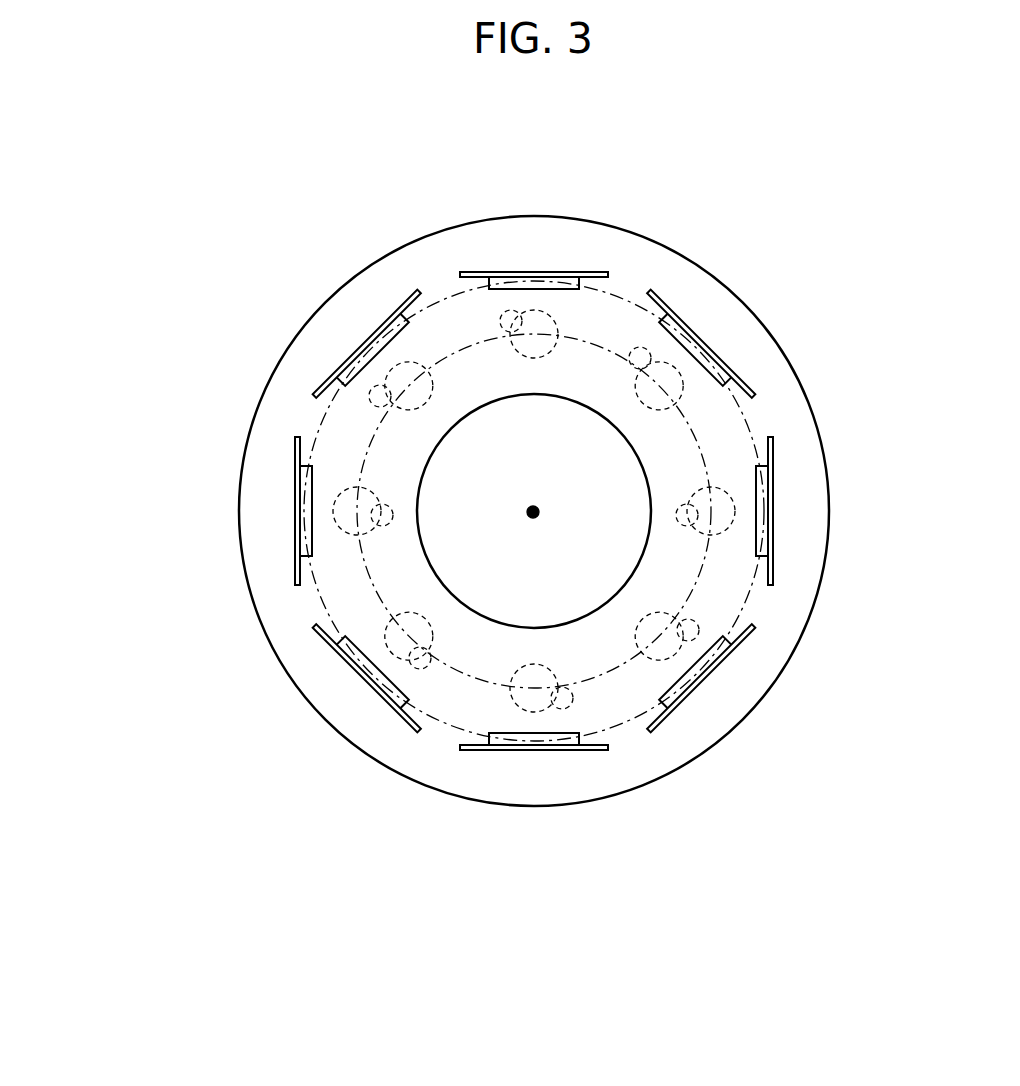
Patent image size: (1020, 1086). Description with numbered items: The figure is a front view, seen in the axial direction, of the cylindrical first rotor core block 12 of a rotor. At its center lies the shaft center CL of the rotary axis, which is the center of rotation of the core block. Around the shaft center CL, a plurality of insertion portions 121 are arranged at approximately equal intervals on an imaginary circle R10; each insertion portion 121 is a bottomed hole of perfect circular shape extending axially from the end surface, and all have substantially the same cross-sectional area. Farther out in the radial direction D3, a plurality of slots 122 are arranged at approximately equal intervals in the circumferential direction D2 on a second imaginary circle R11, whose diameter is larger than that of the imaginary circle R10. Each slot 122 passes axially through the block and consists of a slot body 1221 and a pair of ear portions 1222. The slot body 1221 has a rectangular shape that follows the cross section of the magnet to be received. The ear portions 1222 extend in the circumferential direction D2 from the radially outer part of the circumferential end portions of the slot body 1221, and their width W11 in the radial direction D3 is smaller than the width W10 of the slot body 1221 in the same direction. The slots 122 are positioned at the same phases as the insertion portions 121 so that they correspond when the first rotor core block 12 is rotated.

The first rotor core block 12 is at (636, 230).
The insertion portions 121 is at (498, 327).
The slots 122 is at (535, 520).
The slot body 1221 is at (485, 272).
The ear portions 1222 is at (465, 272).
The shaft center CL is at (528, 518).
The imaginary circle R10 is at (375, 592).
The imaginary circle R11 is at (445, 726).
The width of slot body W10 is at (705, 476).
The width of ear portions W11 is at (715, 440).
The circumferential direction D2 is at (580, 1003).
The radial direction D3 is at (197, 847).